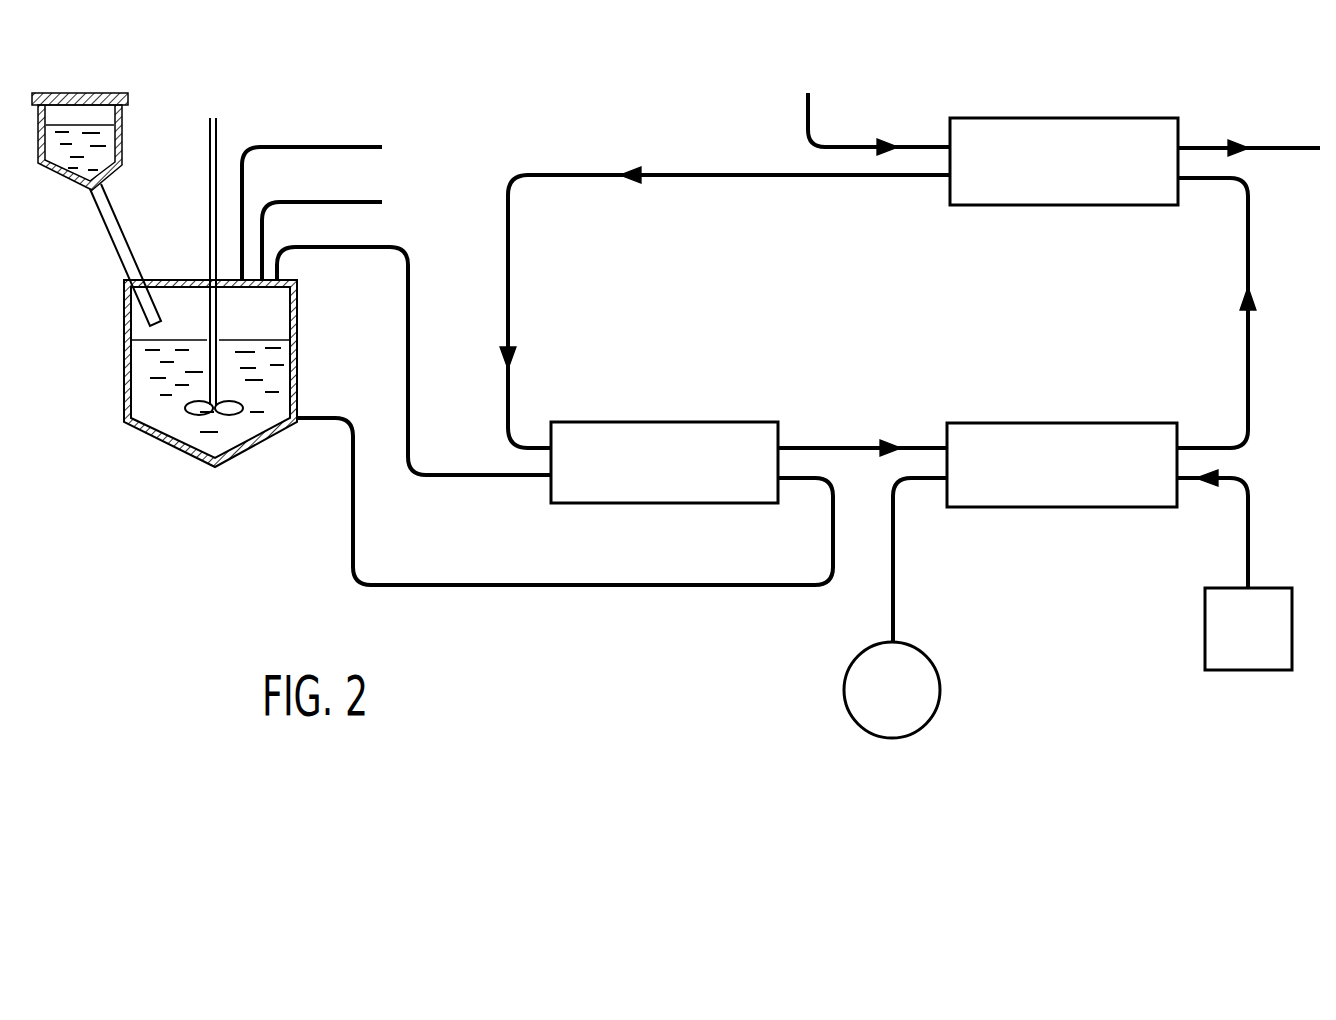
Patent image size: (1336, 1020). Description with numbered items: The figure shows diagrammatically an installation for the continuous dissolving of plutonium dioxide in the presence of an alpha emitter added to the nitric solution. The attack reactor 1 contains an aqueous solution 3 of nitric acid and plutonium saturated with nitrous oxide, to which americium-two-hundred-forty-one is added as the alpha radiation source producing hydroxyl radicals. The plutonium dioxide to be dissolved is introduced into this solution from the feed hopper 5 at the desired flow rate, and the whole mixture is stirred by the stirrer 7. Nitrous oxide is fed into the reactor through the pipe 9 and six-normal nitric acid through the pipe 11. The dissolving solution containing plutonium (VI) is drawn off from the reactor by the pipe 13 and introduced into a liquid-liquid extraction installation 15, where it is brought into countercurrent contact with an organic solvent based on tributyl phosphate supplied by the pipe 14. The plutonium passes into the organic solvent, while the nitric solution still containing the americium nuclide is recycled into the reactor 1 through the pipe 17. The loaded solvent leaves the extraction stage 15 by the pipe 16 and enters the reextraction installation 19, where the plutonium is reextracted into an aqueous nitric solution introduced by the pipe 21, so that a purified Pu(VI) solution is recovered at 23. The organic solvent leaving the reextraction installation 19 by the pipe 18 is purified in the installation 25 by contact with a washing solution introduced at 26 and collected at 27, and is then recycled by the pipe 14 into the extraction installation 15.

The attack reactor 1 is at (298, 355).
The aqueous solution 3 is at (125, 359).
The feed hopper 5 is at (125, 120).
The stirrer 7 is at (216, 126).
The pipe 9 is at (290, 202).
The pipe 11 is at (290, 147).
The pipe 13 is at (352, 537).
The pipe 14 is at (740, 178).
The liquid-liquid extraction installation 15 is at (701, 422).
The pipe 16 is at (828, 447).
The pipe 17 is at (405, 306).
The pipe 18 is at (1252, 250).
The reextraction installation 19 is at (1058, 423).
The pipe 21 is at (1250, 535).
The purified Pu(VI) solution outlet 23 is at (897, 563).
The solvent purification installation 25 is at (1060, 118).
The washing solution inlet 26 is at (845, 147).
The washing solution outlet 27 is at (1275, 148).